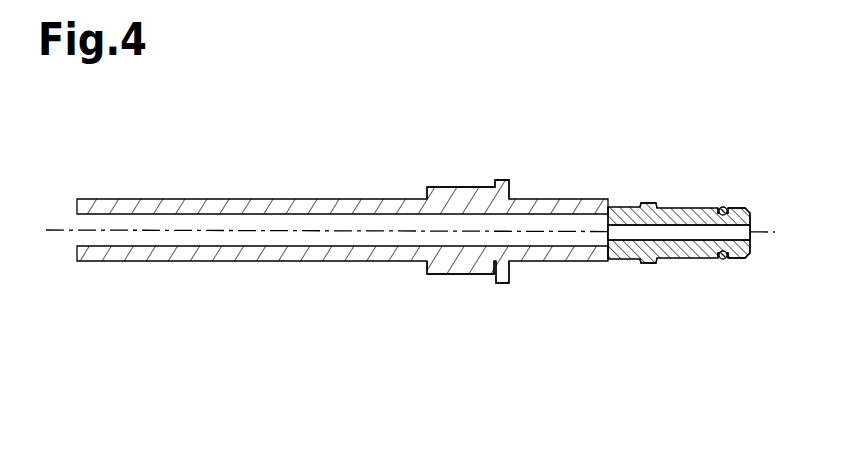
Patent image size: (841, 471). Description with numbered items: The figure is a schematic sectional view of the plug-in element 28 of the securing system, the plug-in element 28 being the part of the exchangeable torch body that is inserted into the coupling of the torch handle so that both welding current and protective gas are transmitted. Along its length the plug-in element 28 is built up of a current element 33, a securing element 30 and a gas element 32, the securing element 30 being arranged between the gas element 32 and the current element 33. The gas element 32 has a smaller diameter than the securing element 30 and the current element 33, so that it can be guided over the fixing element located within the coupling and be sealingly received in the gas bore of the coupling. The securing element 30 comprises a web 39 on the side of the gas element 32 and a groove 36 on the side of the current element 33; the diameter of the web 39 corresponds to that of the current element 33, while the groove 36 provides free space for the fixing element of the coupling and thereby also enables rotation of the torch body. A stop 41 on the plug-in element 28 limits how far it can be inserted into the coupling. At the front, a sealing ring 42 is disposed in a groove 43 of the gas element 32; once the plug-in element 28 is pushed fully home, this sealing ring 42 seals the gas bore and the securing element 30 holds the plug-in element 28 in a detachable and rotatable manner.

The plug-in element 28 is at (573, 138).
The securing element 30 is at (668, 298).
The gas element 32 is at (737, 305).
The current element 33 is at (557, 302).
The groove 36 is at (657, 263).
The web 39 is at (673, 262).
The stop 41 is at (508, 181).
The sealing ring 42 is at (725, 210).
The groove 43 is at (718, 205).